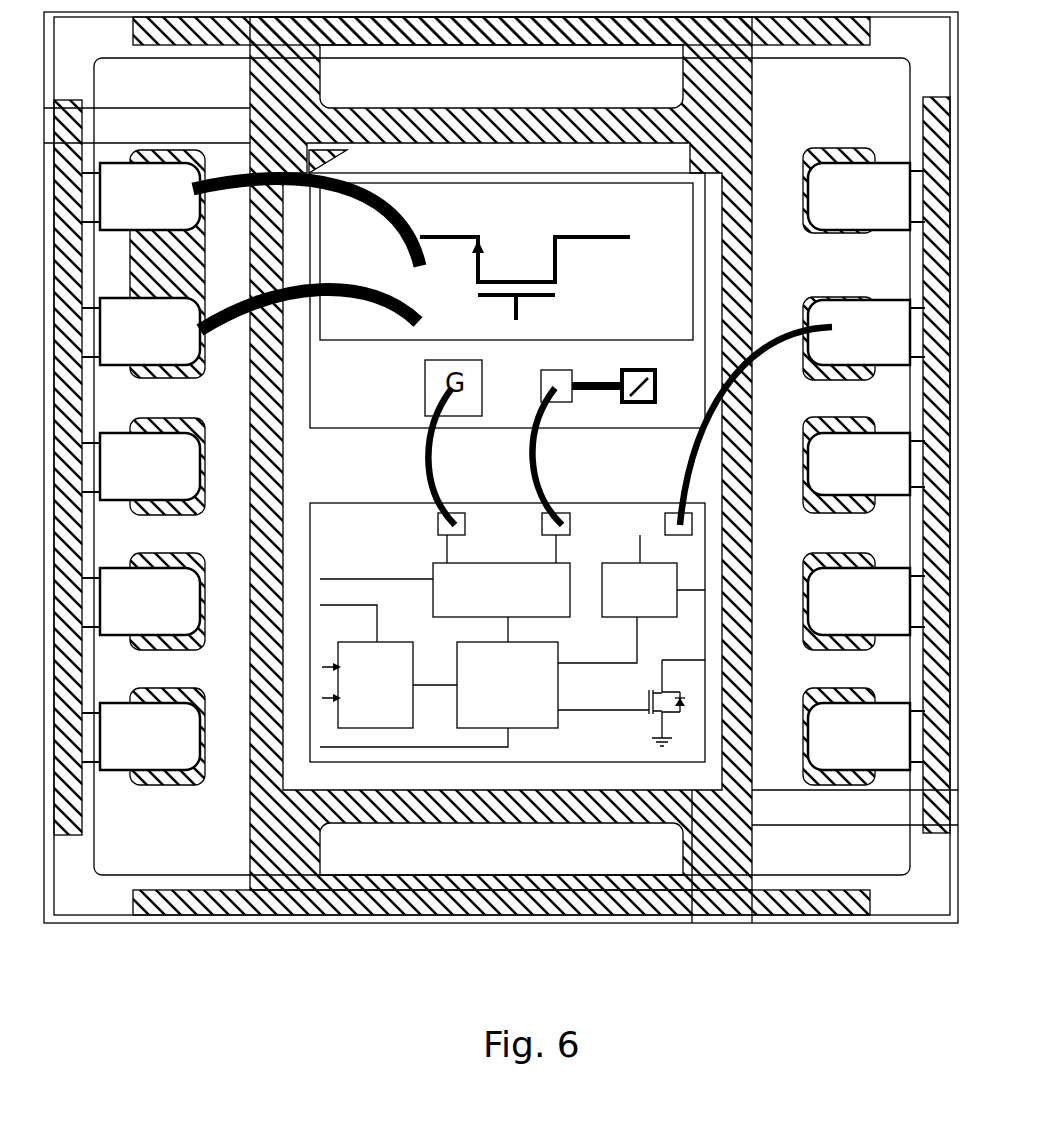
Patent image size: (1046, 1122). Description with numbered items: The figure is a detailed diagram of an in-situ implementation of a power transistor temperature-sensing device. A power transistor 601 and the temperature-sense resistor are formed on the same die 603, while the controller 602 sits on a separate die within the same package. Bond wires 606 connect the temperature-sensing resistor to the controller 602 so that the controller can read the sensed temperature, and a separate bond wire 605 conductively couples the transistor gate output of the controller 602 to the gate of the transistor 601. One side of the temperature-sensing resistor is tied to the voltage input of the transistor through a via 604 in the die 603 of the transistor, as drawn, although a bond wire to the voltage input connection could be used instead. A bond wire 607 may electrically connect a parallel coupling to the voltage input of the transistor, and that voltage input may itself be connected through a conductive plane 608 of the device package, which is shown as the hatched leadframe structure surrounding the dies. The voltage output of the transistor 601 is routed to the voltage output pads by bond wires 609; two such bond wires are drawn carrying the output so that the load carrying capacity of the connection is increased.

The power transistor 601 is at (663, 324).
The controller 602 is at (365, 551).
The die 603 is at (377, 394).
The via 604 is at (681, 398).
The bond wire 605 is at (427, 446).
The bond wires 606 is at (535, 456).
The bond wire 607 is at (757, 394).
The conductive plane 608 is at (753, 95).
The bond wires 609 is at (380, 186).